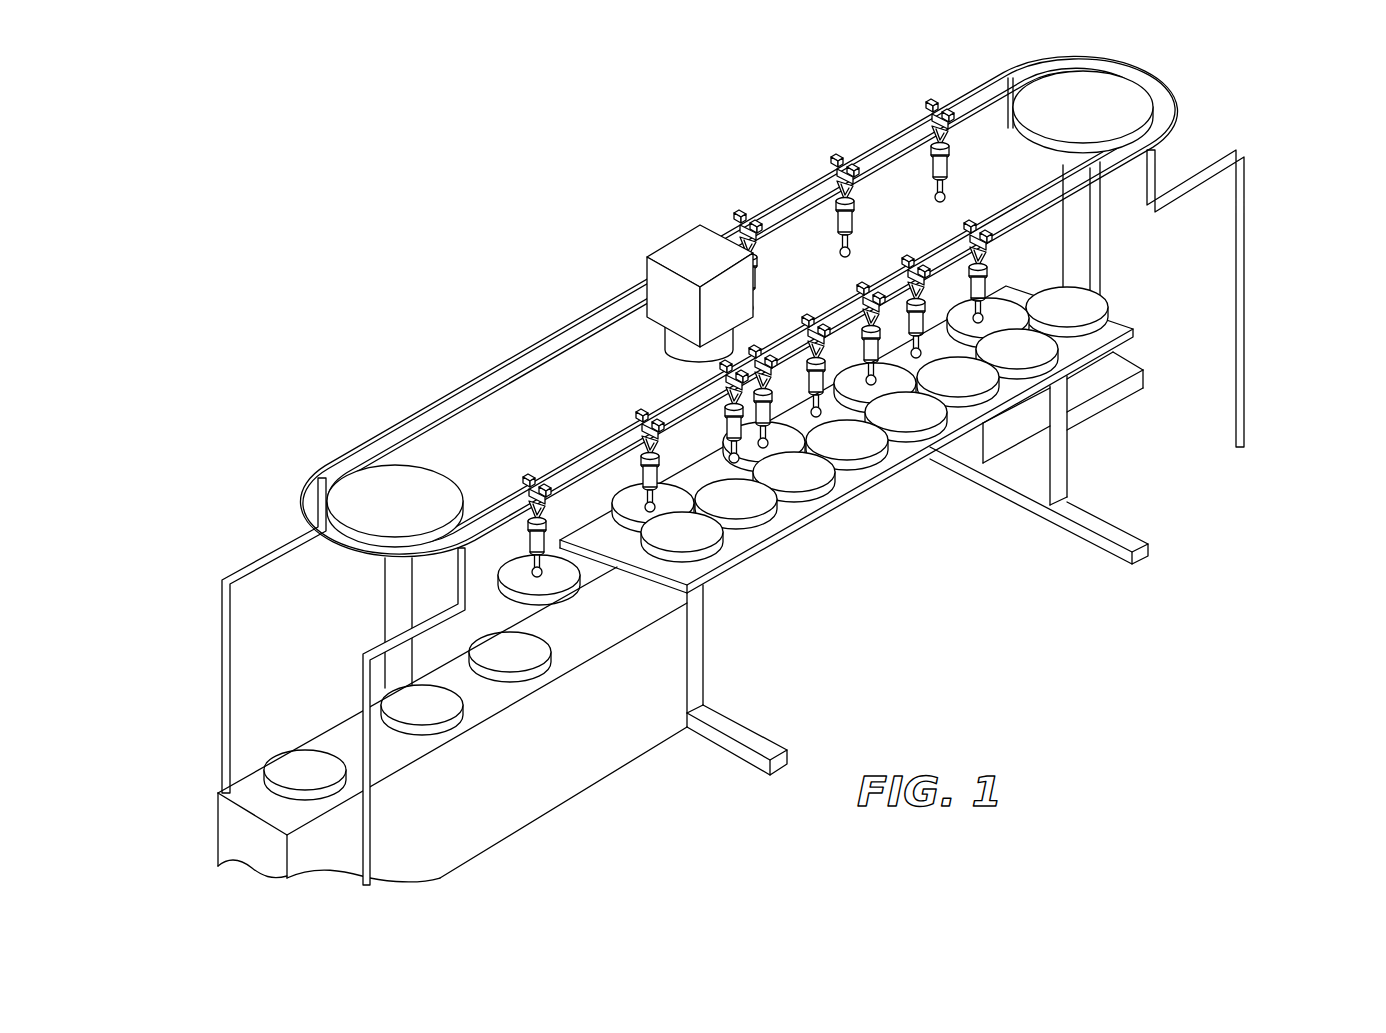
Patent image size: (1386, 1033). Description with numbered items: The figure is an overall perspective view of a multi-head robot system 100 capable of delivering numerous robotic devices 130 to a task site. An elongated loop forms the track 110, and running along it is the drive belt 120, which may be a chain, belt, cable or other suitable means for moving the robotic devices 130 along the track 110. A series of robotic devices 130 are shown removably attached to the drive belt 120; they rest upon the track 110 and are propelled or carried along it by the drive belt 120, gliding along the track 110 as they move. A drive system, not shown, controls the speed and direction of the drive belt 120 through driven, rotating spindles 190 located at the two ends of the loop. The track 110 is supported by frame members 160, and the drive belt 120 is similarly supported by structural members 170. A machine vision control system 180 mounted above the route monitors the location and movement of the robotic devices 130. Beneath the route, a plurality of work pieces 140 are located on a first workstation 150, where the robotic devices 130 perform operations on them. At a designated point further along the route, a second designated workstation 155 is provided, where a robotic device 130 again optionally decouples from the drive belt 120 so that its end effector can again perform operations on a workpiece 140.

The multi-head robot system 100 is at (487, 183).
The track 110 is at (1177, 102).
The drive belt 120 is at (513, 382).
The robotic devices 130 is at (850, 222).
The work pieces 140 is at (755, 507).
The first workstation 150 is at (847, 477).
The second designated workstation 155 is at (576, 781).
The frame members 160 is at (1243, 266).
The structural members 170 is at (1082, 253).
The machine vision control system 180 is at (670, 248).
The spindles 190 is at (422, 477).